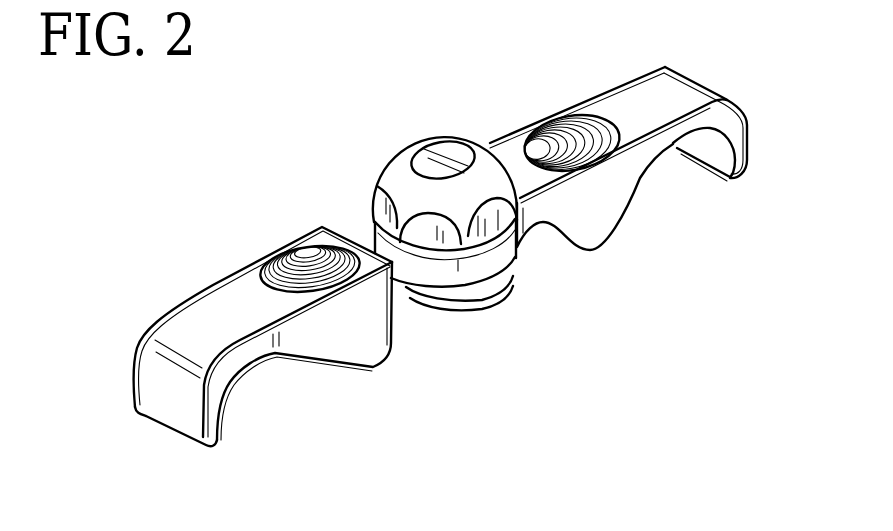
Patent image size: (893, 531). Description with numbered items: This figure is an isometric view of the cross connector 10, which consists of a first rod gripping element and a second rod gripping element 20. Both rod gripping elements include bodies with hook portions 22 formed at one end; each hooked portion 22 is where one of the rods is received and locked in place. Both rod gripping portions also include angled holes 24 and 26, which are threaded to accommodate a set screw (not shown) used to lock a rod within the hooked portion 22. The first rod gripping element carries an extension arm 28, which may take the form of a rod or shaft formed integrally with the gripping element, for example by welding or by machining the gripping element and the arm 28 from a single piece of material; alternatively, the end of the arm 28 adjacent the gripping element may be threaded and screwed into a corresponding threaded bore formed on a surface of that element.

The cross connector 10 is at (192, 322).
The second rod gripping element 20 is at (668, 139).
The hook portion 22 is at (216, 440).
The angled hole 24 is at (306, 248).
The angled hole 26 is at (560, 118).
The extension arm 28 is at (396, 286).